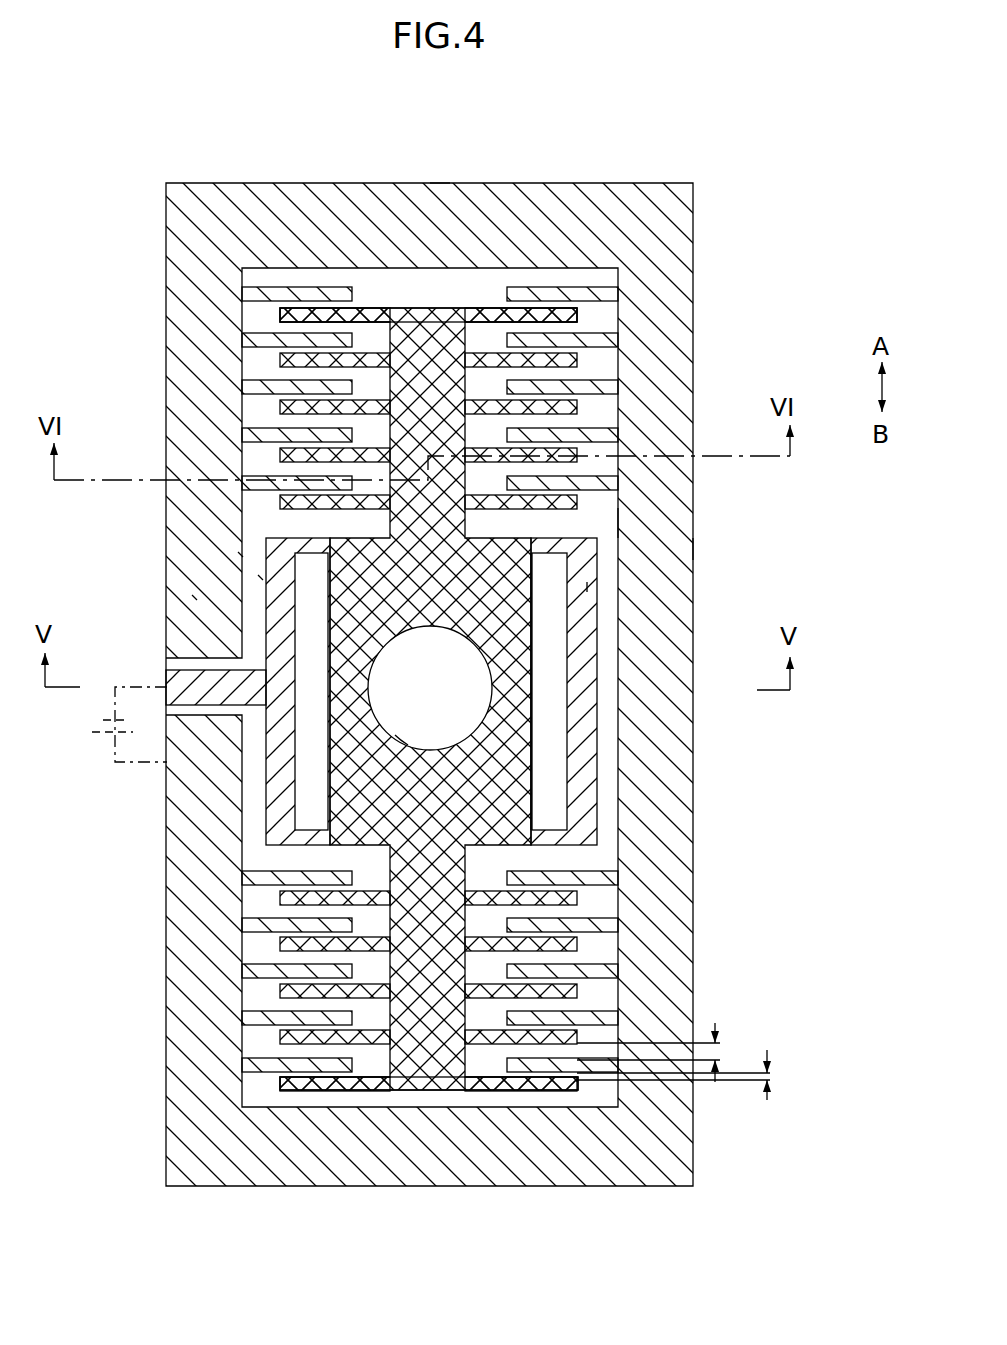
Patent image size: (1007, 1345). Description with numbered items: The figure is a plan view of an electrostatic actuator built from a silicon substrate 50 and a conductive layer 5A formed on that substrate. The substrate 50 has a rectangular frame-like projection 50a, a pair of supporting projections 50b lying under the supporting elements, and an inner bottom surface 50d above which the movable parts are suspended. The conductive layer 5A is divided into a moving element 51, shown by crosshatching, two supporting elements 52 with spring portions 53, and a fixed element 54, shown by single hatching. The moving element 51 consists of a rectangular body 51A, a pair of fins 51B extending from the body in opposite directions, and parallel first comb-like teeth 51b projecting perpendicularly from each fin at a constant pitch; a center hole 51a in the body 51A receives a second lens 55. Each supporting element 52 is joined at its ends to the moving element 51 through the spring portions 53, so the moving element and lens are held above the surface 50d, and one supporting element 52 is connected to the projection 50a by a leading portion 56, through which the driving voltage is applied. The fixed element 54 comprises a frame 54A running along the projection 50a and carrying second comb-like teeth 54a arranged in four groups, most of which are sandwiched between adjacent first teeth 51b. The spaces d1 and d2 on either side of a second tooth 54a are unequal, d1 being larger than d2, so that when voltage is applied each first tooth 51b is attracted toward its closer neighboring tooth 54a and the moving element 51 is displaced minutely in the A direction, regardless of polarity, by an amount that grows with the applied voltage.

The conductive layer 5A is at (440, 183).
The silicon substrate 50 is at (602, 517).
The frame-like projection 50a is at (197, 600).
The supporting projections 50b is at (263, 580).
The inner bottom surface 50d is at (243, 557).
The moving element 51 is at (553, 653).
The center hole 51a is at (372, 685).
The body 51A is at (533, 732).
The fins 51B is at (422, 1217).
The comb-like teeth 51b is at (308, 362).
The supporting elements 52 is at (273, 813).
The spring portions 53 is at (303, 537).
The fixed element 54 is at (695, 852).
The frame 54A is at (677, 548).
The comb-like teeth 54a is at (538, 287).
The second lens 55 is at (407, 720).
The leading portion 56 is at (207, 677).
The space d1 is at (666, 1052).
The space d2 is at (690, 1075).